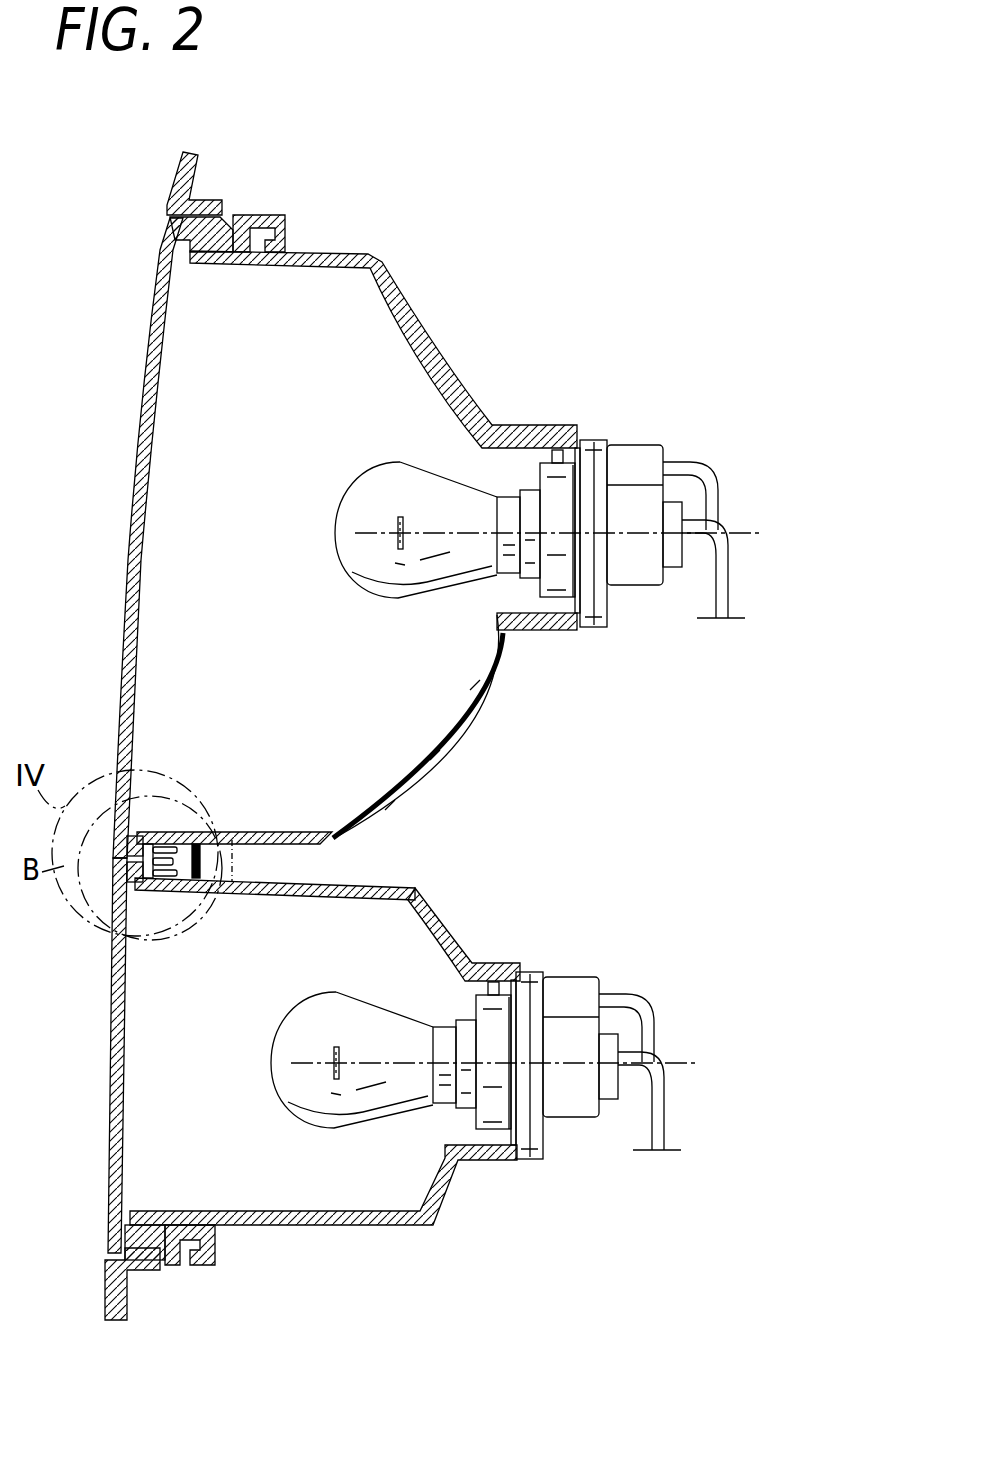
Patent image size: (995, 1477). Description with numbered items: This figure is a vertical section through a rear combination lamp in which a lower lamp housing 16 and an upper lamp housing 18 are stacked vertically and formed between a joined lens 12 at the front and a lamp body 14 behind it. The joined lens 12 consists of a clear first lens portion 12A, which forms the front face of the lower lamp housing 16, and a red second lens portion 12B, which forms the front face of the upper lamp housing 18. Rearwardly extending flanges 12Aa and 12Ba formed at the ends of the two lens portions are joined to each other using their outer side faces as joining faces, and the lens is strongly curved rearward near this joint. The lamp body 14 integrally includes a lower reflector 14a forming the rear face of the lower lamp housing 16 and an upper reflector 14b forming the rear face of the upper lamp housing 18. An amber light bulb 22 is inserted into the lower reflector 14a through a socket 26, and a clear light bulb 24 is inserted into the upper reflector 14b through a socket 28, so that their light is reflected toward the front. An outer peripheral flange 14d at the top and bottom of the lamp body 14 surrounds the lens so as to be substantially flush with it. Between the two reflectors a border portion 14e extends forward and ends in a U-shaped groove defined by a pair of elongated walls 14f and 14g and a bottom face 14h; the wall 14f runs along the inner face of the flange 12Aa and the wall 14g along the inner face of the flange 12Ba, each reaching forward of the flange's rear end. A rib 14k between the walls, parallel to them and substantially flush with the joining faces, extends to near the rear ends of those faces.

The joined lens 12 is at (117, 735).
The first lens portion 12A is at (110, 1069).
The second lens portion 12B is at (125, 626).
The flange 12Aa is at (145, 882).
The flange 12Ba is at (138, 836).
The lamp body 14 is at (307, 734).
The lower reflector 14a is at (445, 940).
The upper reflector 14b is at (500, 655).
The outer peripheral flange 14d is at (178, 195).
The border portion 14e is at (262, 834).
The elongated wall 14f is at (142, 892).
The elongated wall 14g is at (150, 835).
The bottom face 14h is at (233, 862).
The rib 14k is at (205, 908).
The lower lamp housing 16 is at (226, 1073).
The upper lamp housing 18 is at (262, 598).
The light bulb 22 is at (346, 990).
The light bulb 24 is at (406, 460).
The socket 26 is at (580, 988).
The socket 28 is at (630, 460).